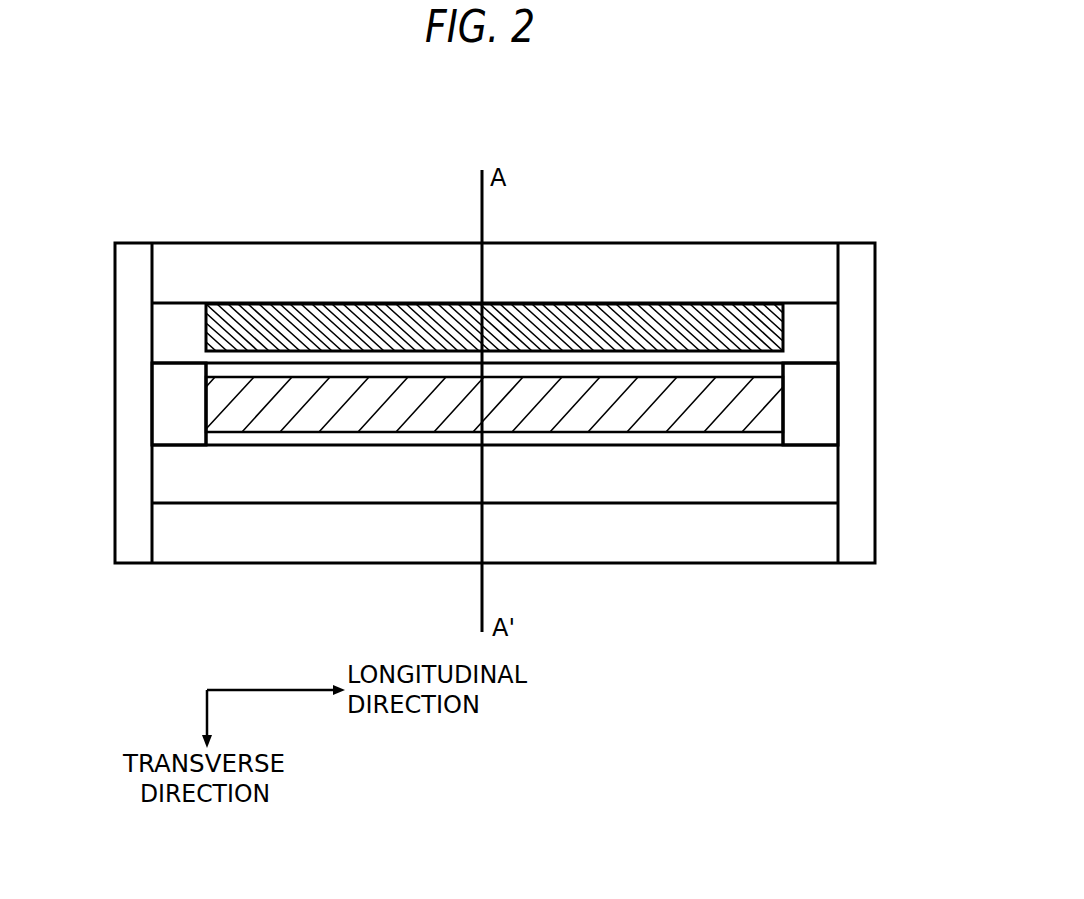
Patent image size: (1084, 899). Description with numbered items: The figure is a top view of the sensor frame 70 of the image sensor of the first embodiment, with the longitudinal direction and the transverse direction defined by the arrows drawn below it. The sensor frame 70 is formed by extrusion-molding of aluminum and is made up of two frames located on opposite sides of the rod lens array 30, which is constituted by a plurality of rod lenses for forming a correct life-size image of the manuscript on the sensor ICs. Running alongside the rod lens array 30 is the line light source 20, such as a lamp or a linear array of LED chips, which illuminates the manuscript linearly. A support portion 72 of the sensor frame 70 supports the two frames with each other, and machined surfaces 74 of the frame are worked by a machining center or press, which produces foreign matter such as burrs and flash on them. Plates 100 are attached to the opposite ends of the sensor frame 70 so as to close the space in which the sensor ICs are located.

The line light source 20 is at (285, 327).
The rod lens array 30 is at (233, 413).
The sensor frame 70 is at (625, 243).
The support portion 72 is at (173, 400).
The machined surfaces 74 is at (758, 437).
The plates 100 is at (140, 547).